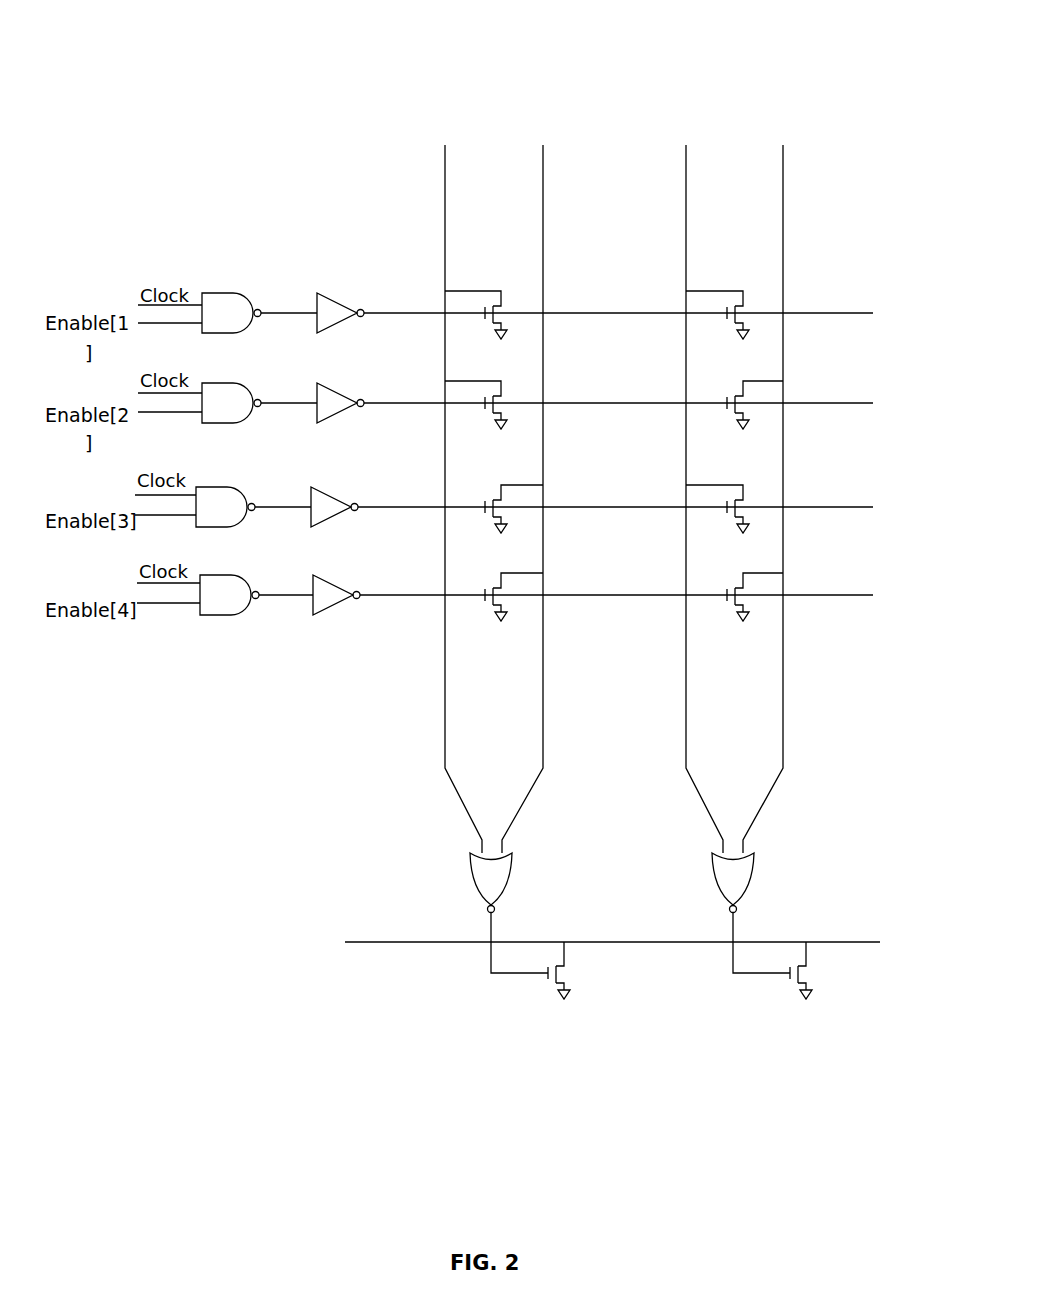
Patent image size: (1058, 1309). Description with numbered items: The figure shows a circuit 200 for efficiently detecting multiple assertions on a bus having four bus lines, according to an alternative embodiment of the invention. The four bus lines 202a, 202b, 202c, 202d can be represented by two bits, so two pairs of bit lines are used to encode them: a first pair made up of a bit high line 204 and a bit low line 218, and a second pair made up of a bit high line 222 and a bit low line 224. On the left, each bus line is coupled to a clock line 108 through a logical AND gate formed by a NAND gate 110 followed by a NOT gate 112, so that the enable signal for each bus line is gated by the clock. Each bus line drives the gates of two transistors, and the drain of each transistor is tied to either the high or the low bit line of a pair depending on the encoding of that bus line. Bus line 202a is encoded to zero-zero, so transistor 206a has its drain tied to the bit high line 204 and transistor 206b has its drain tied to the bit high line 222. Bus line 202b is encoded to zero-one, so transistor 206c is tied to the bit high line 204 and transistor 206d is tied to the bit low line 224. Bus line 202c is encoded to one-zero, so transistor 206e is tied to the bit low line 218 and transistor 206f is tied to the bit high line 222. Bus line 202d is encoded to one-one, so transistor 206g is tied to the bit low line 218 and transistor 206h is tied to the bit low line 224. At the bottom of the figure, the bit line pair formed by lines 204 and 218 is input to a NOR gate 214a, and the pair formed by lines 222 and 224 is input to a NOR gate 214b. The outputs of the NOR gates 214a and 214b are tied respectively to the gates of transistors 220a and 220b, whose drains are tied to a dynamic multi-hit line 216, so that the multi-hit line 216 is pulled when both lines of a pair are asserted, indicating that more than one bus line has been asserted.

The circuit 200 is at (784, 52).
The clock line 108 is at (138, 305).
The NAND gate 110 is at (225, 282).
The NOT gate 112 is at (330, 294).
The bit high [1] line 204 is at (447, 163).
The bit low [1] line 218 is at (545, 163).
The bit high [0] line 222 is at (688, 163).
The bit low [0] line 224 is at (785, 163).
The transistor 206a is at (473, 291).
The transistor 206b is at (714, 291).
The transistor 206c is at (480, 379).
The transistor 206d is at (768, 381).
The transistor 206e is at (512, 484).
The transistor 206f is at (722, 484).
The transistor 206g is at (512, 571).
The transistor 206h is at (752, 572).
The bus line 202a is at (855, 313).
The bus line 202b is at (855, 403).
The bus line 202c is at (855, 507).
The bus line 202d is at (855, 595).
The NOR gate 214a is at (512, 853).
The NOR gate 214b is at (754, 853).
The multi-hit line 216 is at (880, 942).
The transistor 220a is at (587, 977).
The transistor 220b is at (830, 977).